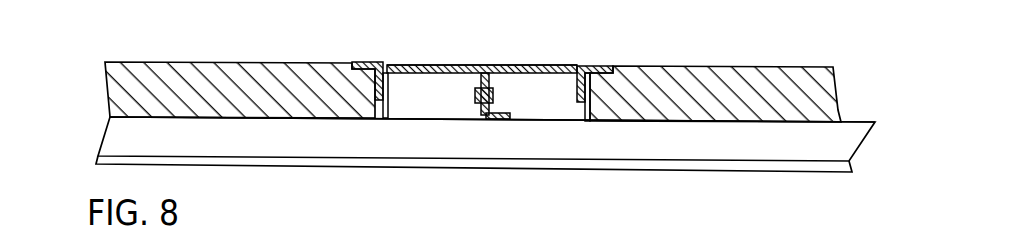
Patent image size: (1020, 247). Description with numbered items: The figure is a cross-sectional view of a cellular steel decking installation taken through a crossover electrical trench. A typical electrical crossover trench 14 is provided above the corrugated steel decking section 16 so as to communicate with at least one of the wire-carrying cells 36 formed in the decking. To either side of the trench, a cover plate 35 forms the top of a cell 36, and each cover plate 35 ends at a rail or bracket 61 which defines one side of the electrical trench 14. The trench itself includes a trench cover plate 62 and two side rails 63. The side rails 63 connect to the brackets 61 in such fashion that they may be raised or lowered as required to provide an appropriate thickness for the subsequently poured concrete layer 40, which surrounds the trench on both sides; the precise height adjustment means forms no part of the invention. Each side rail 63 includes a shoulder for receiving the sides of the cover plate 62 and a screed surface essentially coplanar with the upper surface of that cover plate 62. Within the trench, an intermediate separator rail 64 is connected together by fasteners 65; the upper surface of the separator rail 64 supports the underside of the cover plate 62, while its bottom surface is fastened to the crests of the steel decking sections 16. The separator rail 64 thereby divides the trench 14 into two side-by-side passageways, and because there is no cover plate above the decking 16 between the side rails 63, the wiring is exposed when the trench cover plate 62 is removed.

The electrical crossover trench 14 is at (448, 52).
The corrugated steel decking section 16 is at (120, 142).
The cover plate 35 is at (222, 118).
The cell 36 is at (311, 152).
The concrete layer 40 is at (163, 63).
The rail or bracket 61 is at (373, 118).
The cover plate 62 is at (507, 66).
The side rail 63 is at (366, 62).
The intermediate separator rail 64 is at (499, 103).
The fastener 65 is at (474, 93).